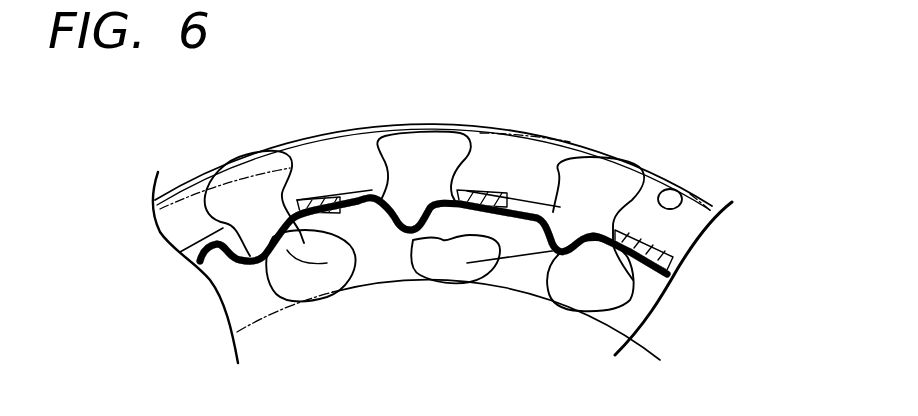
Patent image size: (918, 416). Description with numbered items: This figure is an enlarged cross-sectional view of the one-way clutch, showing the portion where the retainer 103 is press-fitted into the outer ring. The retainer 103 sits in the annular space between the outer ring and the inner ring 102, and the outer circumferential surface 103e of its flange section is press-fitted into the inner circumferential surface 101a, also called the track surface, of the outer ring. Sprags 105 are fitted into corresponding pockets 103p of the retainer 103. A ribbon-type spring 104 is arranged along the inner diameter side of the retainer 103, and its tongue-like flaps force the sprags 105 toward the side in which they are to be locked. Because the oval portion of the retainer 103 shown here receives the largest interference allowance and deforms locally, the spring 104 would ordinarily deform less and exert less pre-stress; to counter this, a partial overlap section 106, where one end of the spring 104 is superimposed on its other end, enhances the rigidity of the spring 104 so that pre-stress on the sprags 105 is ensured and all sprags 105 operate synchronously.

The inner circumferential surface 101a is at (687, 190).
The inner ring 102 is at (660, 338).
The retainer 103 is at (285, 150).
The outer circumferential surface 103e is at (507, 129).
The pockets 103p is at (367, 197).
The spring 104 is at (511, 220).
The sprags 105 is at (298, 283).
The partial overlap section 106 is at (490, 275).